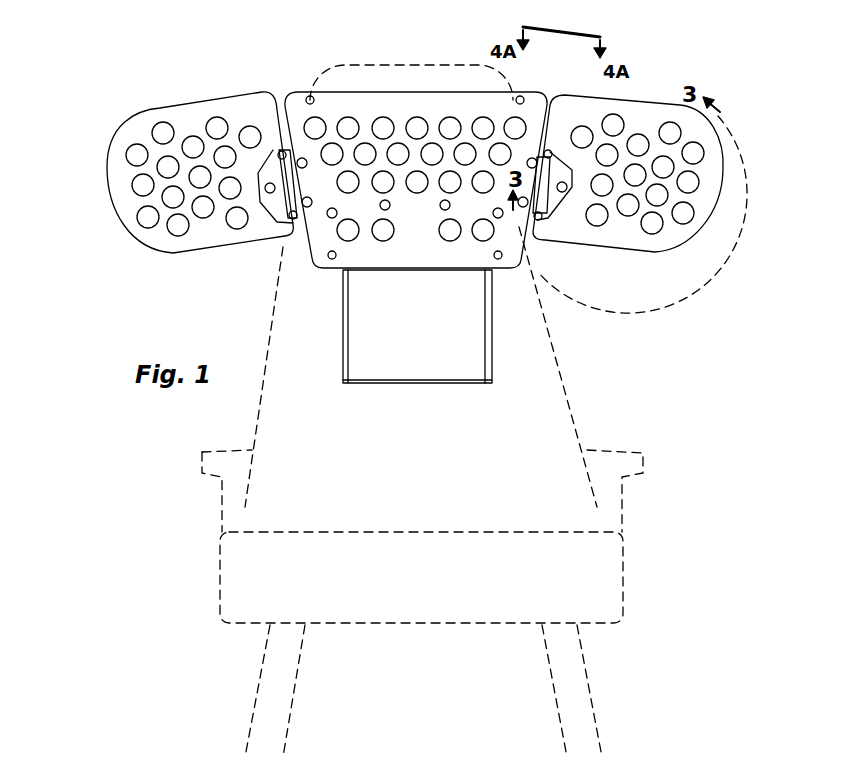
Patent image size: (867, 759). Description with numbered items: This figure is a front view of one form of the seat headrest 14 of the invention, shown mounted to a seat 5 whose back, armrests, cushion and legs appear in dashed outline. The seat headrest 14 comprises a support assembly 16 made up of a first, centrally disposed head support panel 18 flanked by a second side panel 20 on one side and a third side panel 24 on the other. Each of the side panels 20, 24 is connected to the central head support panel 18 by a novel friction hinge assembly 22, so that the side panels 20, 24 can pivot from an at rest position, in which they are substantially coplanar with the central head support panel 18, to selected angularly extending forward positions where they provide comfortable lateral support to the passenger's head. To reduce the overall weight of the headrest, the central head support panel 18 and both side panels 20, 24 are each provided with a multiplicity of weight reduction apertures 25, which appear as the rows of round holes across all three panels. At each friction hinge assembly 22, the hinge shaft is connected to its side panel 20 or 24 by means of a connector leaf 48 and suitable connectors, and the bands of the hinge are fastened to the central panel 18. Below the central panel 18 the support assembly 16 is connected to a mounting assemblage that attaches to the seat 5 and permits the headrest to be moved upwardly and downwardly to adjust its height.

The chair 5 is at (557, 382).
The seat headrest 14 is at (238, 68).
The support assembly 16 is at (370, 80).
The central head support panel 18 is at (437, 251).
The second side panel 20 is at (182, 115).
The friction hinge assembly 22 is at (268, 221).
The third side panel 24 is at (632, 112).
The weight reduction apertures 25 is at (140, 213).
The connector leaves 48 is at (267, 165).